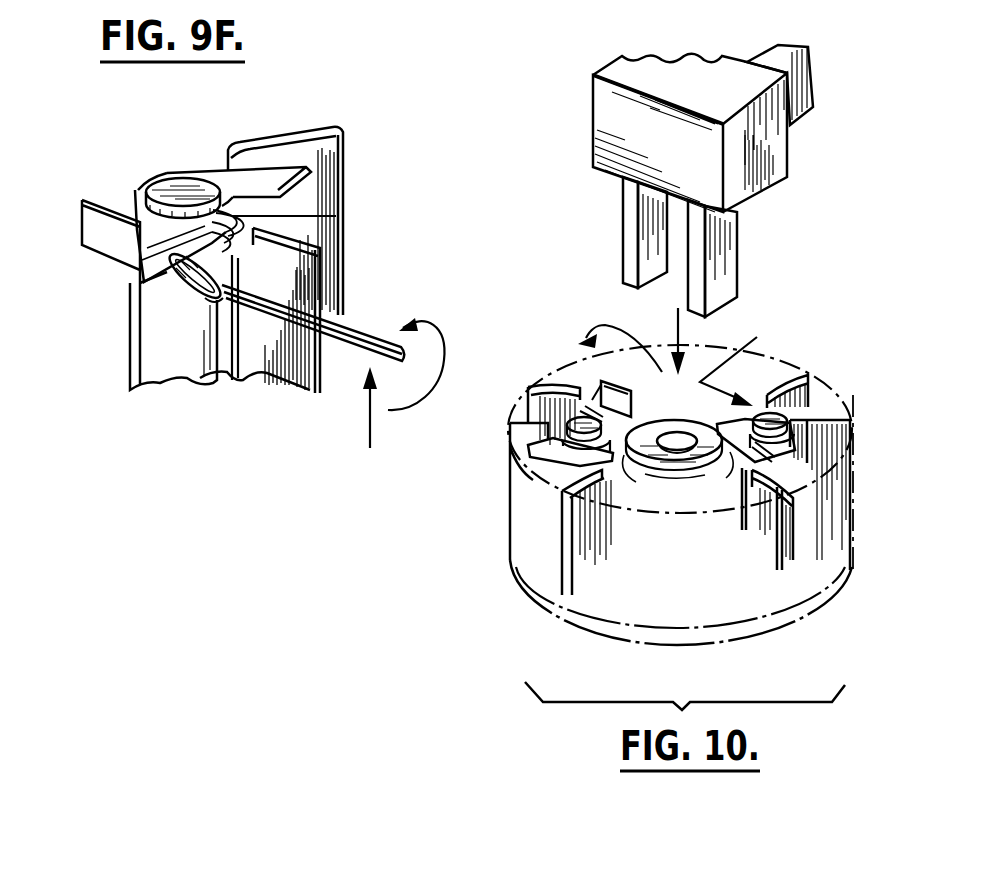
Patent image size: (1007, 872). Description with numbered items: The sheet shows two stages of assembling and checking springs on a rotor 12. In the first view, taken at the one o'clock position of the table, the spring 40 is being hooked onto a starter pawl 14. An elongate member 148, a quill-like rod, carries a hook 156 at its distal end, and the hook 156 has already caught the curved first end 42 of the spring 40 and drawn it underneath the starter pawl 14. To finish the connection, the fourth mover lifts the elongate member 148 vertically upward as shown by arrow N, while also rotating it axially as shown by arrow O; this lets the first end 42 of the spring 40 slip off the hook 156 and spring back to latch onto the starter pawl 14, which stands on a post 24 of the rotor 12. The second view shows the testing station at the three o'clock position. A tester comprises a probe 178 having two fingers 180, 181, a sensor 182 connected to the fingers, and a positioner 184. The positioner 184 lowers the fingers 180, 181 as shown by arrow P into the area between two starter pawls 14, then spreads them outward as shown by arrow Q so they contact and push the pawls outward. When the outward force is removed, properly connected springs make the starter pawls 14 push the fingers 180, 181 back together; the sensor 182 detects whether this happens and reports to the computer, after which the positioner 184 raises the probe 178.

In FIG. 10, the rotor 12 is at (508, 525).
In FIG. 9F, the starter pawl 14 is at (100, 232).
In FIG. 10, the starter pawl 14 is at (718, 418).
In FIG. 9F, the support post 24 is at (140, 333).
In FIG. 9F, the spring 40 is at (318, 209).
In FIG. 9F, the first end of the spring 42 is at (213, 305).
In FIG. 9F, the elongate member 148 is at (362, 322).
In FIG. 9F, the hook 156 is at (173, 287).
In FIG. 10, the probe 178 is at (768, 190).
In FIG. 10, the finger 180 is at (632, 207).
In FIG. 10, the finger 181 is at (718, 257).
In FIG. 10, the sensor 182 is at (760, 142).
In FIG. 10, the positioner 184 is at (806, 72).
In FIG. 9F, the arrow N is at (365, 425).
In FIG. 9F, the arrow O is at (447, 341).
In FIG. 10, the arrow P is at (672, 322).
In FIG. 10, the arrow Q is at (678, 351).